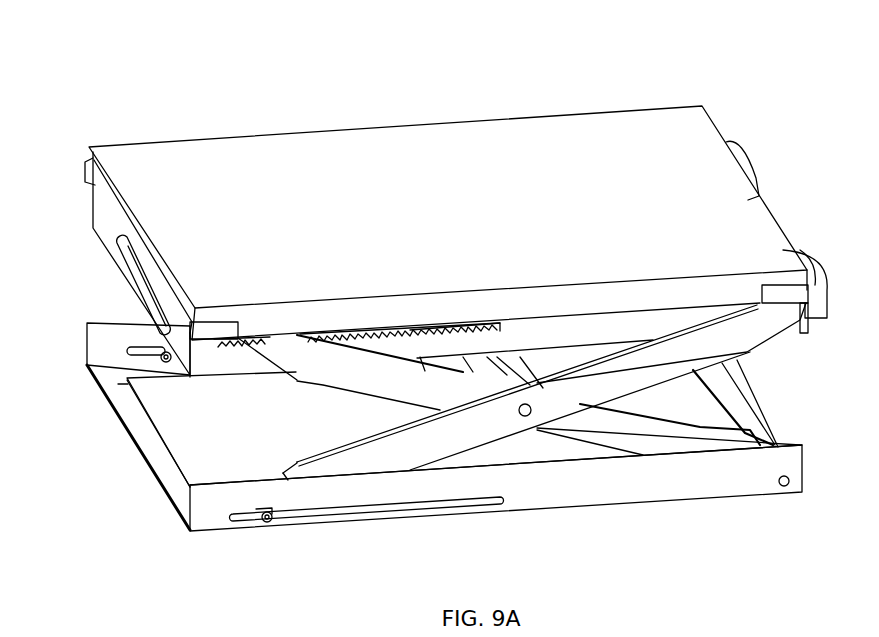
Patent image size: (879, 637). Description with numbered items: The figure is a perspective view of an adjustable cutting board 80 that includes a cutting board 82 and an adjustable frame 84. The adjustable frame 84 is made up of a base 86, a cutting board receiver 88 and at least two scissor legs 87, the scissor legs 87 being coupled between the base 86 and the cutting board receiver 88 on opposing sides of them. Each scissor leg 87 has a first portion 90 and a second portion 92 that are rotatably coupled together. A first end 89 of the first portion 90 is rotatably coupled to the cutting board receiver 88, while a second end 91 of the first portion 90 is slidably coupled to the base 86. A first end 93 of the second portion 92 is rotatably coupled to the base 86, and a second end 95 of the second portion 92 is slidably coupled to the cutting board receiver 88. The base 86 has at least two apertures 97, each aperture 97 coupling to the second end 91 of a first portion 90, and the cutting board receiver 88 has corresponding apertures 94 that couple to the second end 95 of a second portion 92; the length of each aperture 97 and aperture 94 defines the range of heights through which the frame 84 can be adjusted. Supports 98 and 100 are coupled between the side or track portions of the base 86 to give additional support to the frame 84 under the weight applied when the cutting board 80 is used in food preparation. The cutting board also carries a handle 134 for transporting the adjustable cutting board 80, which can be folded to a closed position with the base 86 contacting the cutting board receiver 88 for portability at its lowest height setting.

The adjustable cutting board 80 is at (288, 84).
The cutting board 82 is at (547, 145).
The adjustable frame 84 is at (112, 485).
The base 86 is at (543, 494).
The scissor legs 87 is at (254, 424).
The cutting board receiver 88 is at (120, 389).
The first end of the first portion 89 is at (770, 320).
The first portion 90 is at (490, 428).
The second end of the first portion 91 is at (325, 466).
The second portion 92 is at (606, 424).
The first end of the second portion 93 is at (723, 441).
The aperture of the cutting board receiver 94 is at (235, 354).
The second end of the second portion 95 is at (290, 350).
The aperture of the base 97 is at (360, 514).
The support 98 is at (120, 388).
The support 100 is at (737, 400).
The handle 134 is at (140, 287).